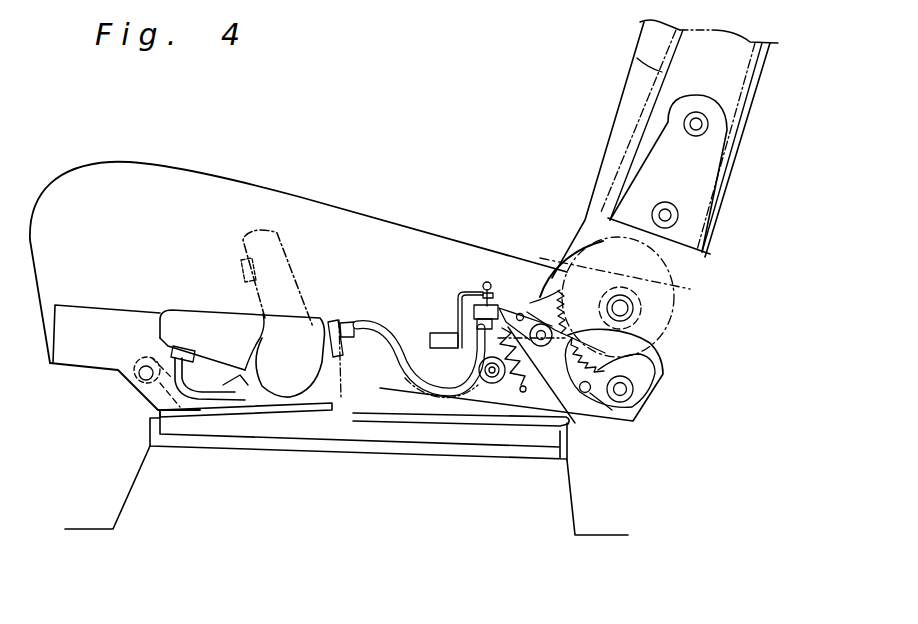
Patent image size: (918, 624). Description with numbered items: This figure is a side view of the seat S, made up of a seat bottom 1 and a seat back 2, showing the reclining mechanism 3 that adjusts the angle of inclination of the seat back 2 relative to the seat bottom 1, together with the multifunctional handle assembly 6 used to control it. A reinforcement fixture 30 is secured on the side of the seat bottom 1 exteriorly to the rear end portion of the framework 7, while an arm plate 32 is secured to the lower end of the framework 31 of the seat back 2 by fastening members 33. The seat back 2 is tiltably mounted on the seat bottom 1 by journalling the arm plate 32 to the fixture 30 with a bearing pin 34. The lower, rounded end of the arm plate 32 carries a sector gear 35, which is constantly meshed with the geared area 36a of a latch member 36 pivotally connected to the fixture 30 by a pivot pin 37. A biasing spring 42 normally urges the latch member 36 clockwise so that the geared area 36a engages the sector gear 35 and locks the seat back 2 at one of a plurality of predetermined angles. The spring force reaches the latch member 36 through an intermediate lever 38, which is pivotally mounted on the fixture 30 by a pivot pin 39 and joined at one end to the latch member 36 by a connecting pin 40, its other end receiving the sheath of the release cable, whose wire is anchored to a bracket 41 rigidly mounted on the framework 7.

The seat S is at (556, 83).
The seat bottom 1 is at (422, 205).
The seat back 2 is at (614, 128).
The reclining mechanism 3 is at (548, 281).
The multifunctional handle assembly 6 is at (182, 300).
The framework 7 is at (223, 384).
The reinforcement fixture 30 is at (533, 380).
The framework 31 is at (637, 58).
The arm plate 32 is at (683, 310).
The fastening members 33 is at (697, 131).
The bearing pin 34 is at (623, 305).
The sector gear 35 is at (645, 372).
The latch member 36 is at (553, 370).
The geared area 36a is at (580, 395).
The pivot pin 37 is at (598, 400).
The intermediate lever 38 is at (510, 303).
The pivot pin 39 is at (521, 312).
The connecting pin 40 is at (645, 358).
The bracket 41 is at (460, 290).
The biasing spring 42 is at (492, 380).